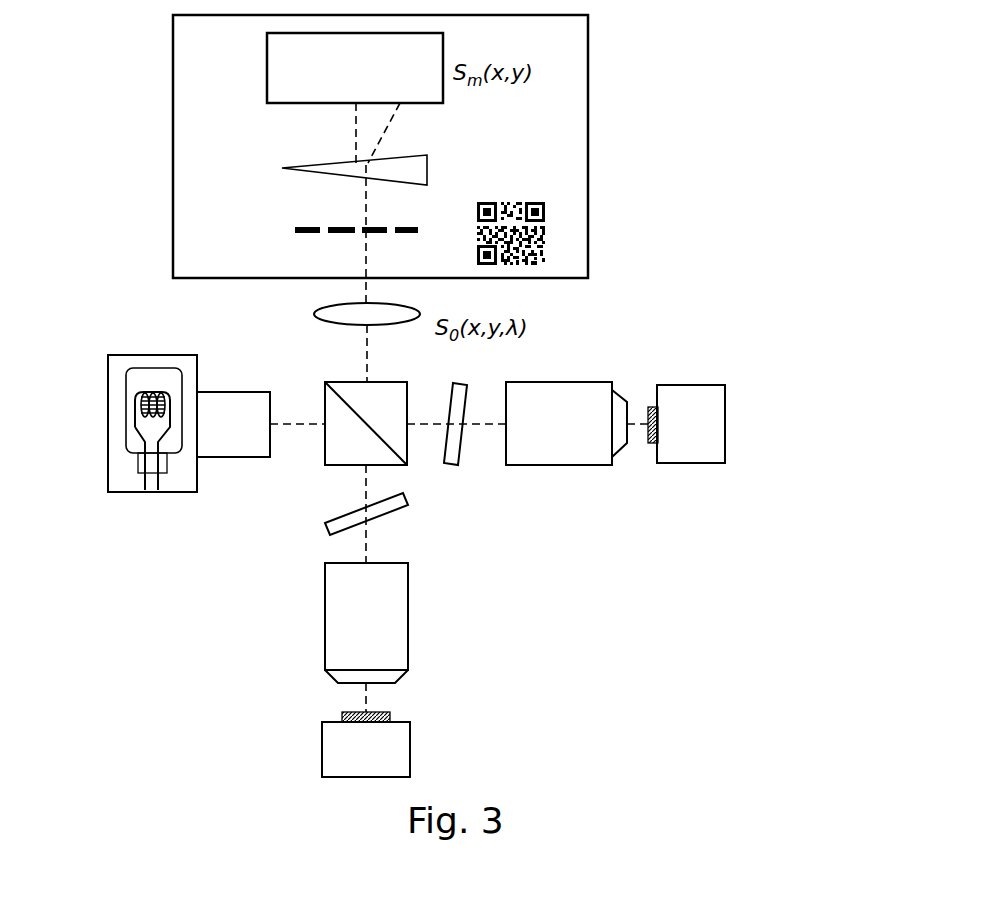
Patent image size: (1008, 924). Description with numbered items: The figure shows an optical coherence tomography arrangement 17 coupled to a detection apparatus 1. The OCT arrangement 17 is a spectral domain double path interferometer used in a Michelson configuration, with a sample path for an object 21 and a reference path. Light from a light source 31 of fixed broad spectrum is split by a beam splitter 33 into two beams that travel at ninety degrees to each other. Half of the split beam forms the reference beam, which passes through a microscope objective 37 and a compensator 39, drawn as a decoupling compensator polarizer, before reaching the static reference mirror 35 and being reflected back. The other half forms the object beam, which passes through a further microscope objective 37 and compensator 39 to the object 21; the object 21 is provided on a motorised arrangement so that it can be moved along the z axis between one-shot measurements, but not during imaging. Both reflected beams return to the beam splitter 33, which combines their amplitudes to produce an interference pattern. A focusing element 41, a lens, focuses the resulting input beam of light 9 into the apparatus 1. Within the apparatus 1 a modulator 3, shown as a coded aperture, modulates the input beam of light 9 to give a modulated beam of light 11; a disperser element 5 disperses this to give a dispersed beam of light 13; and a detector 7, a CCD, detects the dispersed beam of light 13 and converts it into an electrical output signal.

The apparatus 1 is at (604, 101).
The modulator 3 is at (420, 230).
The disperser element 5 is at (428, 168).
The detector 7 is at (267, 72).
The input beam of light 9 is at (365, 258).
The modulated beam of light 11 is at (365, 222).
The dispersed beam of light 13 is at (393, 117).
The optical coherence tomography arrangement 17 is at (708, 361).
The object 21 is at (337, 713).
The light source 31 is at (158, 492).
The beam splitter 33 is at (323, 467).
The static reference mirror 35 is at (649, 450).
The microscope objective 37 is at (557, 465).
The compensator 39 is at (460, 450).
The focusing element 41 is at (387, 325).